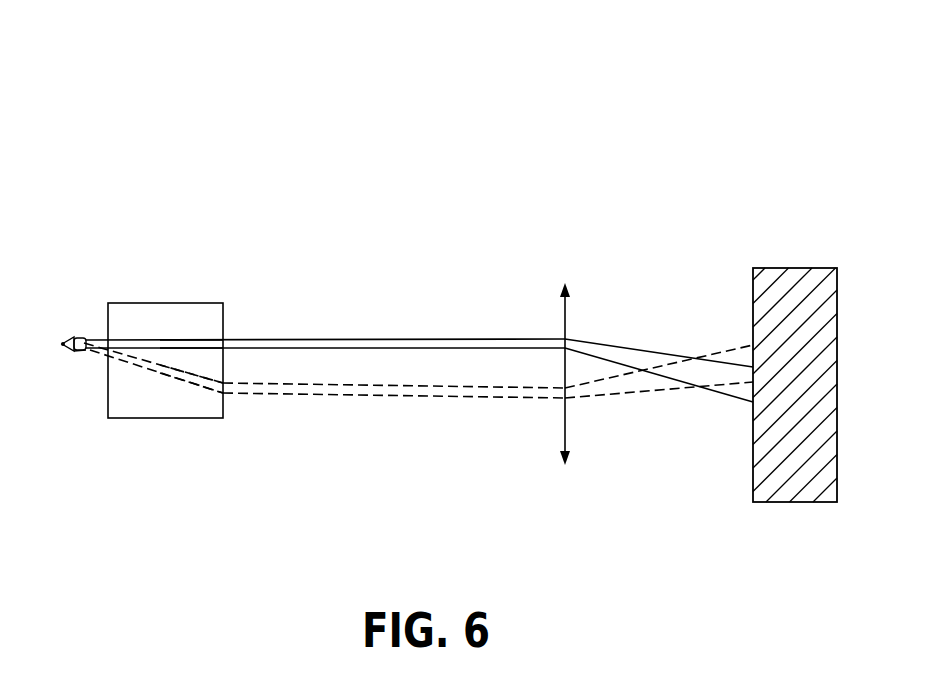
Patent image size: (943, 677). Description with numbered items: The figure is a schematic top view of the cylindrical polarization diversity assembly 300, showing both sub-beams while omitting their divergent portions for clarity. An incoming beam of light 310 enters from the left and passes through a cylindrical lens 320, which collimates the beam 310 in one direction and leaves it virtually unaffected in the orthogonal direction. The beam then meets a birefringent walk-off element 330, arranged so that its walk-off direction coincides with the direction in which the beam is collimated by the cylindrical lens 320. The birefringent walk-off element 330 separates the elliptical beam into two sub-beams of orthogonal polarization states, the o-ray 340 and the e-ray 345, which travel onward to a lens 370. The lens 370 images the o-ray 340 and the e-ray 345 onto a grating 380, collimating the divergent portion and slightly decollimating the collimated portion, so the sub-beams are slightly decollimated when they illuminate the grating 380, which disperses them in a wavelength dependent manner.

The cylindrical polarization diversity assembly 300 is at (255, 72).
The incoming beam of light 310 is at (77, 335).
The cylindrical lens 320 is at (83, 354).
The birefringent walk-off element 330 is at (150, 418).
The o-ray 340 is at (198, 339).
The e-ray 345 is at (190, 385).
The lens 370 is at (568, 438).
The grating 380 is at (795, 502).